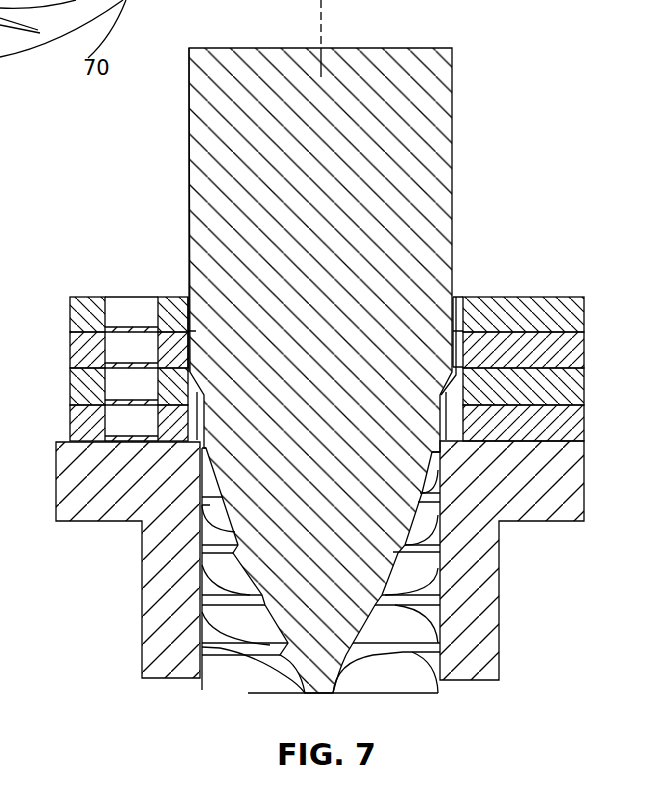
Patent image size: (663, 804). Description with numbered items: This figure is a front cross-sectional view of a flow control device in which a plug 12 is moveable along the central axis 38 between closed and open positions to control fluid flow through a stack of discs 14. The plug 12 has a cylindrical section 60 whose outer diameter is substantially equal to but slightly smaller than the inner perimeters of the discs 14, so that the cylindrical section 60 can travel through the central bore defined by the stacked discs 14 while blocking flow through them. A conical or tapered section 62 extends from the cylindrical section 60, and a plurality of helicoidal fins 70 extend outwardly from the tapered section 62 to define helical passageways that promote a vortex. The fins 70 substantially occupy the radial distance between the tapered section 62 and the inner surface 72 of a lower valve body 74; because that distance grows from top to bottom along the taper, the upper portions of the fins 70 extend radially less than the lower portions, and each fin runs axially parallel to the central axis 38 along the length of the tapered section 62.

The plug 12 is at (449, 158).
The discs 14 is at (543, 300).
The central axis 38 is at (323, 20).
The cylindrical section 60 is at (188, 148).
The tapered section 62 is at (238, 566).
The helicoidal fins 70 is at (392, 653).
The inner surface 72 is at (219, 643).
The lower valve body 74 is at (483, 588).